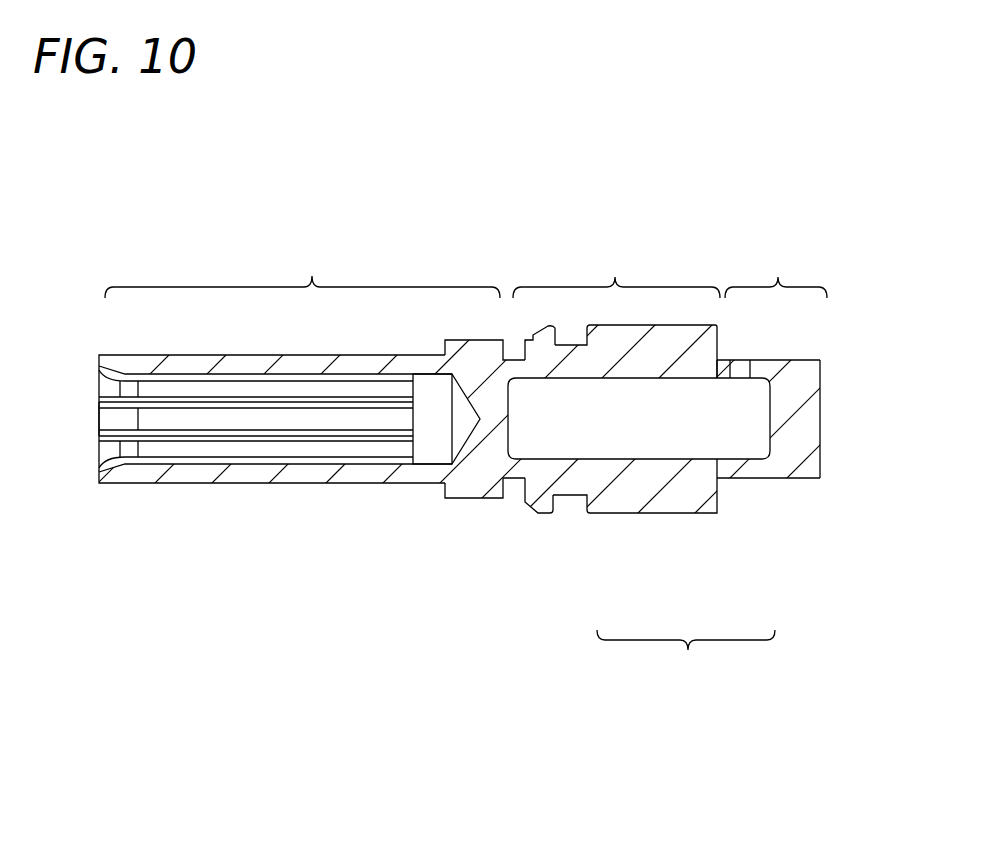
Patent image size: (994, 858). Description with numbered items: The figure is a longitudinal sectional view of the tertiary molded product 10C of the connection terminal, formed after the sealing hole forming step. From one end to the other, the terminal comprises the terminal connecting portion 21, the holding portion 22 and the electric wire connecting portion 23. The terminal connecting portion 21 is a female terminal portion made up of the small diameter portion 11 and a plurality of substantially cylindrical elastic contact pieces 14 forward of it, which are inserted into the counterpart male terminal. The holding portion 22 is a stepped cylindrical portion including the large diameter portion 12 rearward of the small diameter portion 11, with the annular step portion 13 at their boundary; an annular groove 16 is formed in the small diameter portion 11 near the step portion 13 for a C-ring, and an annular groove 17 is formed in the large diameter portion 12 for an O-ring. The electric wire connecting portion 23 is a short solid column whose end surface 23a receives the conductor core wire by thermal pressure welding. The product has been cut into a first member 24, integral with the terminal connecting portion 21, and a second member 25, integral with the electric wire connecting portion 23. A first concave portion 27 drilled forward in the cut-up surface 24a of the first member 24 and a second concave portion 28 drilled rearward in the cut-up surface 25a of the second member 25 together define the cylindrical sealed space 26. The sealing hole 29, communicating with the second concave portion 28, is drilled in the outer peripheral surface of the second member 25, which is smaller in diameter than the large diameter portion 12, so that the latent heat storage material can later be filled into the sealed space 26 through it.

The tertiary molded product 10C is at (166, 245).
The terminal connecting portion 21 is at (302, 272).
The holding portion 22 is at (616, 271).
The electric wire connecting portion 23 is at (776, 271).
The first member 24 is at (225, 496).
The cut-up surface of first member 24a is at (722, 410).
The elastic contact pieces 14 is at (296, 418).
The small diameter portion 11 is at (462, 500).
The annular groove 16 is at (524, 498).
The step portion 13 is at (540, 514).
The annular groove 17 is at (583, 500).
The large diameter portion 12 is at (648, 514).
The second member 25 is at (782, 496).
The cut-up surface of second member 25a is at (722, 432).
The end surface 23a is at (821, 421).
The sealed space 26 is at (686, 655).
The first concave portion 27 is at (522, 420).
The second concave portion 28 is at (760, 433).
The sealing hole 29 is at (738, 372).